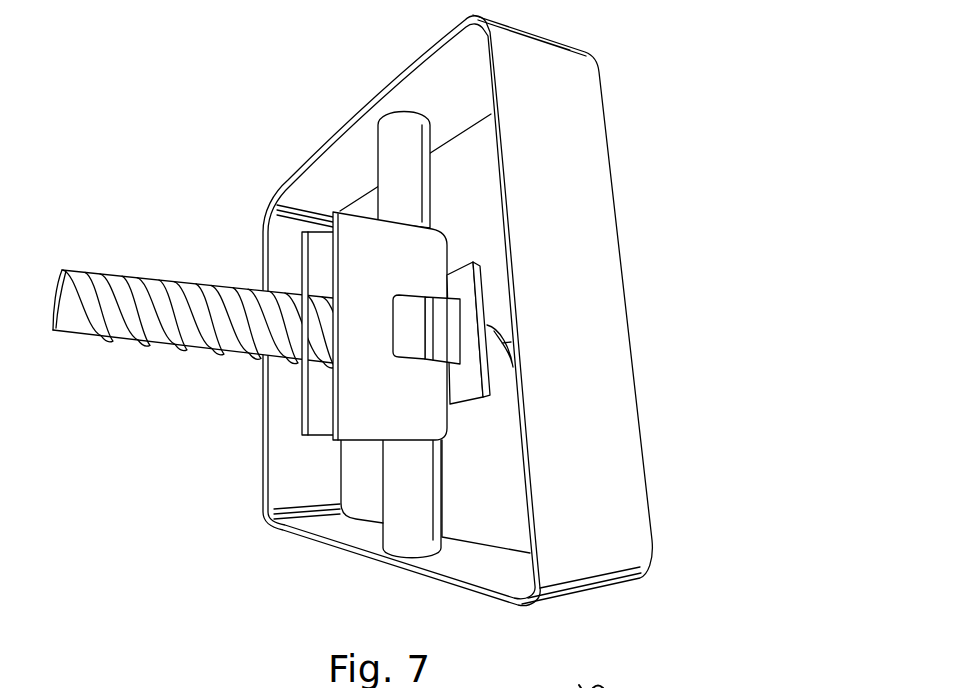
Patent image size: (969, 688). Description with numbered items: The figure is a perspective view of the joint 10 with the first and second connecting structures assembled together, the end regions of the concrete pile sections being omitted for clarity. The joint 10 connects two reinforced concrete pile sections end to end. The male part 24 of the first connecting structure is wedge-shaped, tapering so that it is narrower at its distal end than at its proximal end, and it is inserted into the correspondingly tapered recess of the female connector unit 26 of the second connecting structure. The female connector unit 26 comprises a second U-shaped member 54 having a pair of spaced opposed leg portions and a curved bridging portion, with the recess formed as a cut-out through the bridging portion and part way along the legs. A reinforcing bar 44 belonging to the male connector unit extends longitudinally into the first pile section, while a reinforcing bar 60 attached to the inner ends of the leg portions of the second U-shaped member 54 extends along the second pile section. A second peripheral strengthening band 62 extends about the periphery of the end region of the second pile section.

The joint 10 is at (690, 188).
The male part 24 is at (428, 317).
The female connector unit 26 is at (357, 405).
The reinforcing bar 44 is at (503, 345).
The second U-shaped member 54 is at (363, 236).
The reinforcing bar 60 is at (75, 317).
The second peripheral strengthening band 62 is at (620, 479).